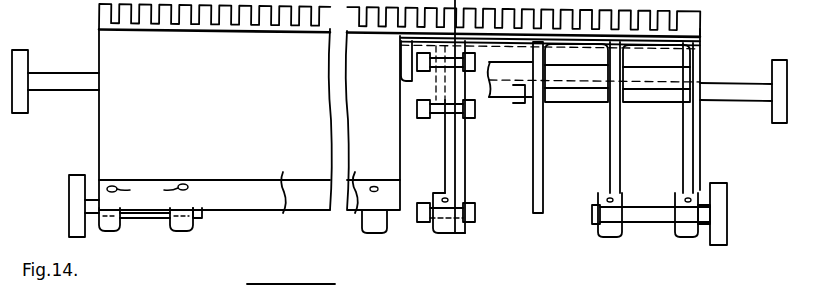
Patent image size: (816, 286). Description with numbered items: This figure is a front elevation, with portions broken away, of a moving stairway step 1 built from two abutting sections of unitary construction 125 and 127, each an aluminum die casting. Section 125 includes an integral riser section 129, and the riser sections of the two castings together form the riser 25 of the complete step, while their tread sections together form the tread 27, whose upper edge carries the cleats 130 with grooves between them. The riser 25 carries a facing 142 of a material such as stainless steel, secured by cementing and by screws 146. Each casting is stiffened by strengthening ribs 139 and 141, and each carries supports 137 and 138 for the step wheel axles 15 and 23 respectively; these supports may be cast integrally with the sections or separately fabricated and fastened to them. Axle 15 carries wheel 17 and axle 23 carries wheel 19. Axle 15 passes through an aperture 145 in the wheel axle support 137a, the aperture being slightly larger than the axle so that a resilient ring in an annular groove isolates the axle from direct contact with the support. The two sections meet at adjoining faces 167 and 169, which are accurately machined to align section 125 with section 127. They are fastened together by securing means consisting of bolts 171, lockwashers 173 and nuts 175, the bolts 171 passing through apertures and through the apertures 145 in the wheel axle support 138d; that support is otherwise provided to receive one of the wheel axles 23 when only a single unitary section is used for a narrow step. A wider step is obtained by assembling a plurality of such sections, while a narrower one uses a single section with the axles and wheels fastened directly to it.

The rack teeth 130 is at (662, 13).
The facing 142 is at (118, 152).
The riser section 129 is at (296, 236).
The screws 146 is at (147, 194).
The section of unitary construction 125 is at (99, 115).
The riser 25 is at (348, 236).
The adjoining face 169 is at (453, 178).
The adjoining face 167 is at (458, 160).
The wheel axle support 138d is at (445, 234).
The wheel axle support 137a is at (442, 120).
The nuts 175 is at (428, 202).
The bolts 171 is at (475, 213).
The lockwashers 173 is at (432, 224).
The aperture 145 is at (525, 100).
The strengthening rib 139 is at (590, 55).
The support 137 is at (683, 123).
The strengthening rib 141 is at (610, 150).
The support 138 is at (687, 232).
The step wheel axle 23 is at (650, 198).
The wheel 19 is at (718, 184).
The section of unitary construction 127 is at (739, 46).
The step wheel axle 15 is at (735, 83).
The wheel 17 is at (779, 60).
The apparatus 1 is at (395, 285).
The tread 27 is at (530, 285).